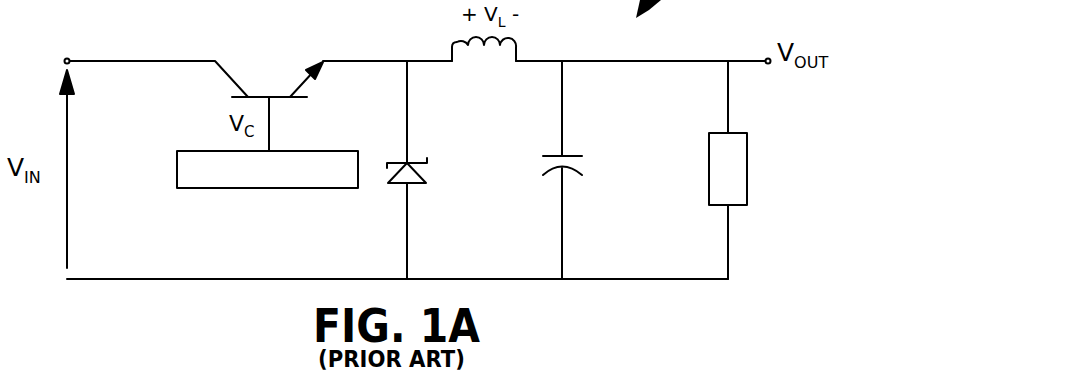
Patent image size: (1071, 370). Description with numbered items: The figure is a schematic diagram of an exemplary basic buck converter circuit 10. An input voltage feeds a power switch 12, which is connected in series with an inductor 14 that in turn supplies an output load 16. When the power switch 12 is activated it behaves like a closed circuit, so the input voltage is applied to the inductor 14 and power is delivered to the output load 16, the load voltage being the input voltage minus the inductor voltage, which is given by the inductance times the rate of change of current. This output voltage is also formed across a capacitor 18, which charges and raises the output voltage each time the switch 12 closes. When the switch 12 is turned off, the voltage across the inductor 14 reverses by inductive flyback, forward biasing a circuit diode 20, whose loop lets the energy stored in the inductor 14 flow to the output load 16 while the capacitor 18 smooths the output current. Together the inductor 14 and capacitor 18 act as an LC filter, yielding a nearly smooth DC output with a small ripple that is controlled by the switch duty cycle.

The buck converter circuit 10 is at (738, 369).
The power switch 12 is at (256, 44).
The inductor 14 is at (458, 36).
The output load 16 is at (747, 165).
The capacitor 18 is at (562, 156).
The circuit diode 20 is at (425, 163).